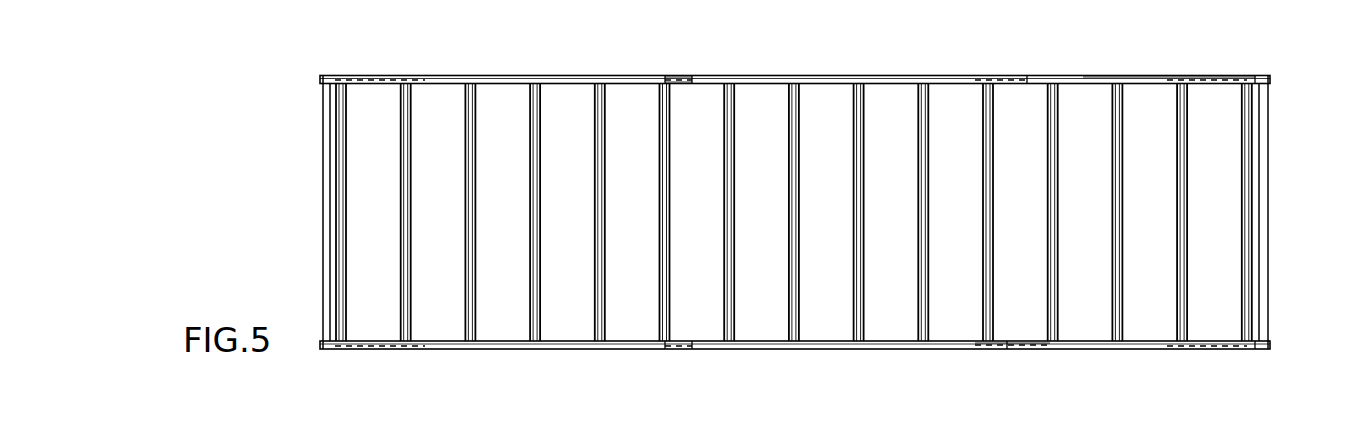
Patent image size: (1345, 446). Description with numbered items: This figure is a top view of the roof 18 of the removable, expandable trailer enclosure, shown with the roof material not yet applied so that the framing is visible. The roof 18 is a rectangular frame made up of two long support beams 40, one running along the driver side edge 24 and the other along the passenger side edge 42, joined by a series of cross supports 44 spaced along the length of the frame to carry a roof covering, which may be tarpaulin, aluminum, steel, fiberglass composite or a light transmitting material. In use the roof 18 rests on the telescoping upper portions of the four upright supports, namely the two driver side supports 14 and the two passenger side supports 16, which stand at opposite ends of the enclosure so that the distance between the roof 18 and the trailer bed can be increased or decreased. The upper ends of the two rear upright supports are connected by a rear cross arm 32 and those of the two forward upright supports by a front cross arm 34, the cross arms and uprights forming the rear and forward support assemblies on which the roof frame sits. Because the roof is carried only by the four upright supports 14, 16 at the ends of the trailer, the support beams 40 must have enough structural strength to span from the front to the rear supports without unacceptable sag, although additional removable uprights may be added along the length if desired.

The driver side support 14 is at (325, 75).
The passenger side support 16 is at (335, 348).
The roof 18 is at (893, 108).
The driver side edge 24 is at (1083, 74).
The rear cross arm 32 is at (323, 200).
The front cross arm 34 is at (1265, 220).
The support beam 40 is at (745, 76).
The passenger side edge 42 is at (1047, 349).
The cross support 44 is at (412, 200).